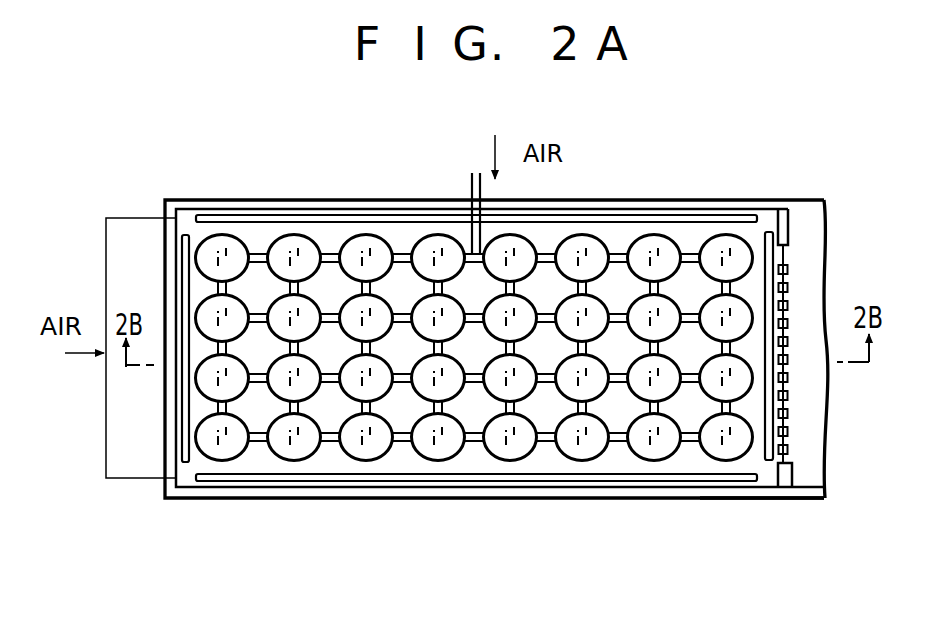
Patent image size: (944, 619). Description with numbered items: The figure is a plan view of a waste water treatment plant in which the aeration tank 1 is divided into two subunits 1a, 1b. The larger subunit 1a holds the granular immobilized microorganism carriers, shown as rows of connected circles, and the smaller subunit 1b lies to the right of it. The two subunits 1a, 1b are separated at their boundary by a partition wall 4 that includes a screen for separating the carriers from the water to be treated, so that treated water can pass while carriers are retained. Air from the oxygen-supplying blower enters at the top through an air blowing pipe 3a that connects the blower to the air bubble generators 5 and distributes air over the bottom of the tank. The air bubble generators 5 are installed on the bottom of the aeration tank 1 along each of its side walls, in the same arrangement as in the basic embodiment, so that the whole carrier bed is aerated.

The aeration tank 1 is at (364, 196).
The subunit 1a is at (462, 498).
The subunit 1b is at (802, 496).
The air blowing pipe 3a is at (617, 254).
The partition wall 4 is at (788, 305).
The air bubble generator 5 is at (716, 215).